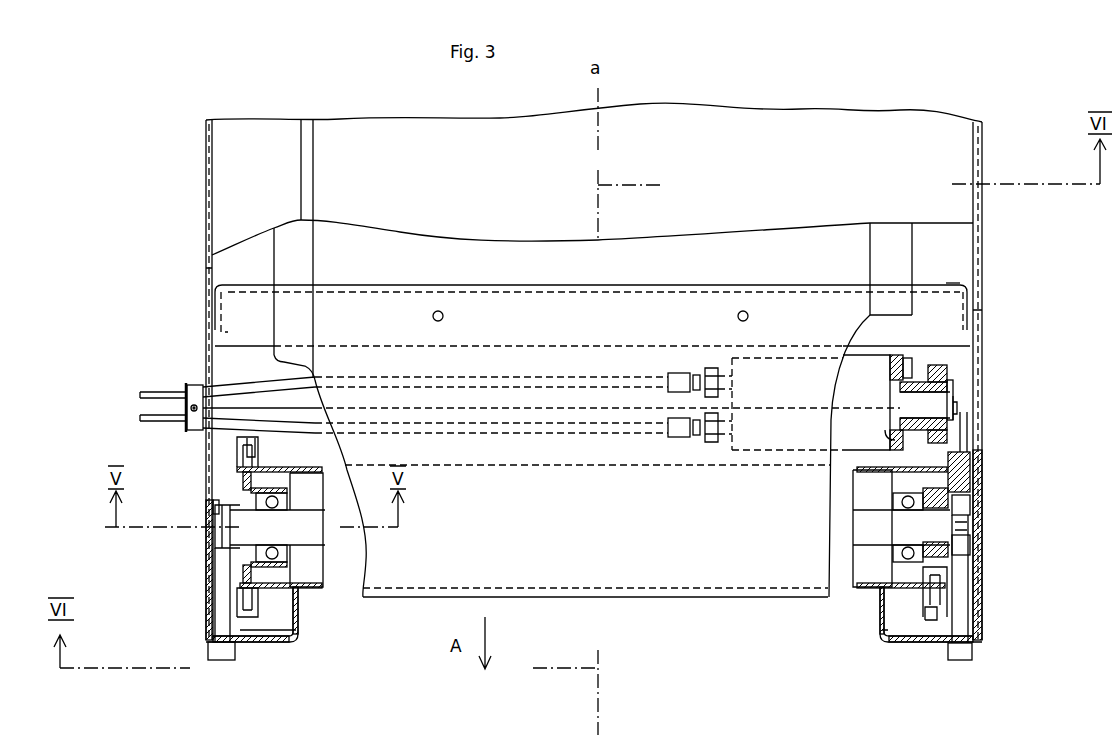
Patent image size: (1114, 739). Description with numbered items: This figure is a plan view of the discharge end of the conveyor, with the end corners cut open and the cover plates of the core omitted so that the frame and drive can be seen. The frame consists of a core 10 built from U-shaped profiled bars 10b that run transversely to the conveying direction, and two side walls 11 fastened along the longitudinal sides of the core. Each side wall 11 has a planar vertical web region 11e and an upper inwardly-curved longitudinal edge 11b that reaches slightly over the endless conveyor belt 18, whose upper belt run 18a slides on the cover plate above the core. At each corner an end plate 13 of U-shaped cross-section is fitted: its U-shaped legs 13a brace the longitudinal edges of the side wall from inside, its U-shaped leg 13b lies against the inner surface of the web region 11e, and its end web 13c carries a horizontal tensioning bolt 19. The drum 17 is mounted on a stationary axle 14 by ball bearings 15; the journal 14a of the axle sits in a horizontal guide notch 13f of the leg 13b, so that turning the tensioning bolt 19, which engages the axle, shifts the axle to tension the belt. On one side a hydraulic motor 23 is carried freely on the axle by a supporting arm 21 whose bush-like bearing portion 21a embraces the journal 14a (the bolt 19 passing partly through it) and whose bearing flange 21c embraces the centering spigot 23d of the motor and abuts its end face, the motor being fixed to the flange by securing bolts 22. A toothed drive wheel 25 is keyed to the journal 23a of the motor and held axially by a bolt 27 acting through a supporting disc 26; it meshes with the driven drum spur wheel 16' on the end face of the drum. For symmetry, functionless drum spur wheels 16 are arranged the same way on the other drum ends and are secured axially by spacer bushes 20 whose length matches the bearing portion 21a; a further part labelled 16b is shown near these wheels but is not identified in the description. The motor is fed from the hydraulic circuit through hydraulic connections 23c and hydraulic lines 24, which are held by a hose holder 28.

The core 10 is at (270, 362).
The profiled bars 10b is at (958, 281).
The side walls 11 is at (192, 302).
The upper inwardly-curved longitudinal edge 11b is at (259, 137).
The web region 11e is at (206, 272).
The end plates 13 is at (282, 659).
The U-shaped legs 13a is at (298, 624).
The U-shaped leg 13b is at (203, 582).
The end face or web 13c is at (255, 648).
The horizontal guide notches 13f is at (211, 503).
The stationary axle 14 is at (870, 527).
The journal 14a is at (972, 527).
The ball bearings 15 is at (290, 498).
The drum spur wheel 16 is at (279, 511).
The driven drum spur wheel 16' is at (980, 592).
The holder bottom 16b is at (256, 612).
The drum 17 is at (345, 566).
The conveyor belt 18 is at (832, 98).
The upper belt run 18a is at (727, 150).
The tensioning bolt 19 is at (215, 650).
The spacer bush 20 is at (232, 505).
The supporting arm 21 is at (992, 488).
The bearing portion 21a is at (972, 548).
The bearing flange 21c is at (893, 370).
The securing bolts 22 is at (915, 368).
The hydraulic motor 23 is at (772, 430).
The journal of the hydraulic motor 23a is at (893, 405).
The hydraulic connections 23c is at (690, 418).
The centering spigot 23d is at (888, 425).
The hydraulic lines 24 is at (145, 418).
The toothed drive wheel 25 is at (946, 385).
The supporting disc 26 is at (957, 398).
The bolt 27 is at (960, 412).
The hose holder 28 is at (189, 392).